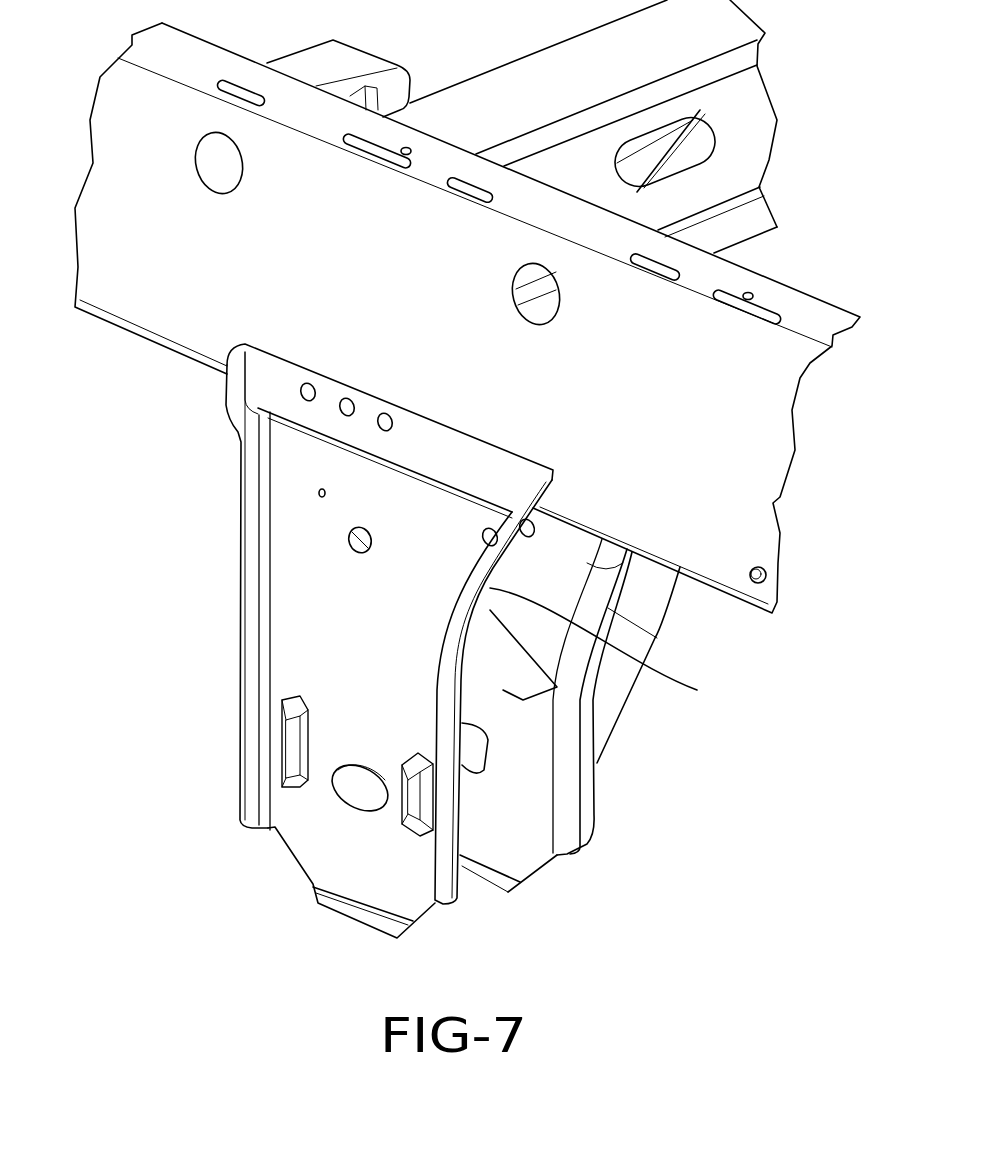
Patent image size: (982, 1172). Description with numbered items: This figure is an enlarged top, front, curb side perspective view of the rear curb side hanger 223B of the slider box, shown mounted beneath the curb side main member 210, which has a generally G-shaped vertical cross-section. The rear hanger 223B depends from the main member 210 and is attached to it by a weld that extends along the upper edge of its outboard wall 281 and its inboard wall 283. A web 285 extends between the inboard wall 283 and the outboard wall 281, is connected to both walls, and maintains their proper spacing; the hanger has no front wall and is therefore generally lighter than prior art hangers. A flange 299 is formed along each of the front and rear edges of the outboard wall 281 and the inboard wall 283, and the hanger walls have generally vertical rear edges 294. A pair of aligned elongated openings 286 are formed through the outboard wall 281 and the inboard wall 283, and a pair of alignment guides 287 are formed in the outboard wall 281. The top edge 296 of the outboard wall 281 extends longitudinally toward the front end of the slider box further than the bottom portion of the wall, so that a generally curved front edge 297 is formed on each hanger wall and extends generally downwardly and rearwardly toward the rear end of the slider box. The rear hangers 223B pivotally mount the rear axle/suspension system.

The main member 210 is at (125, 340).
The top edge of outboard wall 296 is at (408, 433).
The rear edge 294 is at (242, 530).
The flange 299 is at (250, 623).
The web 285 is at (540, 696).
The curved front edge 297 is at (580, 690).
The inboard wall 283 is at (530, 874).
The outboard wall 281 is at (292, 862).
The rear hanger 223B is at (363, 925).
The alignment guide 287 is at (292, 746).
The elongated opening 286 is at (370, 803).